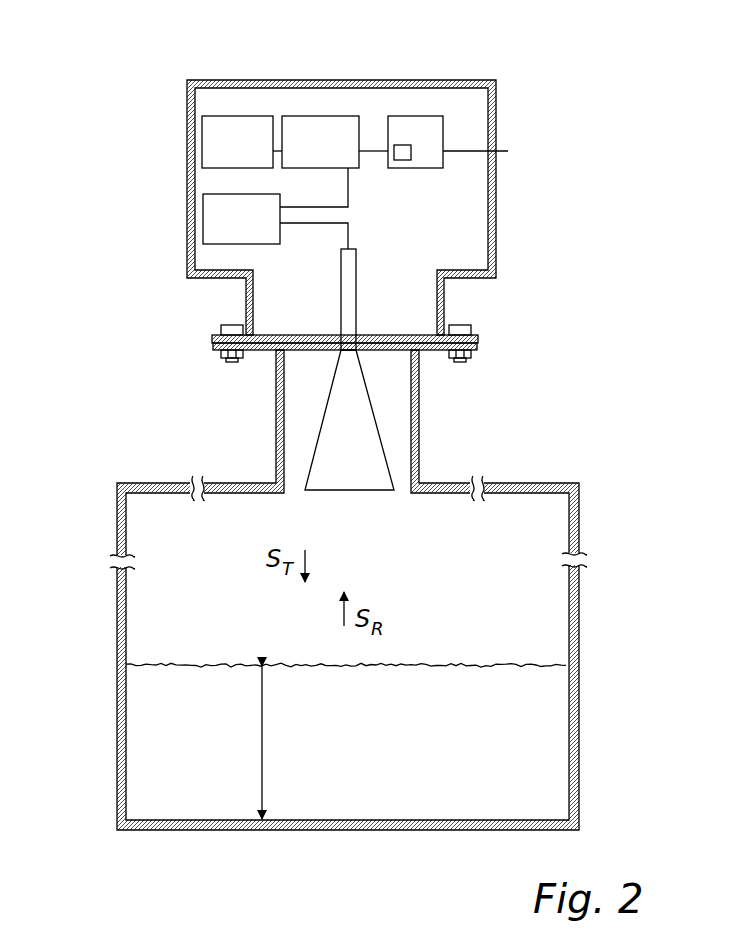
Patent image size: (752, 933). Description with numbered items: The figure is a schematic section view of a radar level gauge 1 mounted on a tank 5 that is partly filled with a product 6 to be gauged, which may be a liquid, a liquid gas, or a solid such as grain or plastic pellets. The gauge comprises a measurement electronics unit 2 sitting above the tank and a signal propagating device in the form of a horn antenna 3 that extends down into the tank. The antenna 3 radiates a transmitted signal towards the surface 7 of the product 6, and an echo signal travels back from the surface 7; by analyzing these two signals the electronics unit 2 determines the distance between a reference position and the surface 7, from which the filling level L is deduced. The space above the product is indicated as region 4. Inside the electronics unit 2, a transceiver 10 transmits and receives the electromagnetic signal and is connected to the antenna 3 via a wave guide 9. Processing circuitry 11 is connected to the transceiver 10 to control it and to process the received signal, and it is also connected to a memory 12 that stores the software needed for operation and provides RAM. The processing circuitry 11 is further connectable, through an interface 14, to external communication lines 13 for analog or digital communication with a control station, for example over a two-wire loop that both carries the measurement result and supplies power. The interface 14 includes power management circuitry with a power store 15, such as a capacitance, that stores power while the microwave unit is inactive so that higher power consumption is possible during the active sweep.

The radar level gauge 1 is at (572, 258).
The measurement electronics unit 2 is at (267, 80).
The horn antenna 3 is at (392, 478).
The tank atmosphere 4 is at (186, 556).
The tank 5 is at (507, 481).
The product 6 is at (513, 765).
The surface 7 is at (535, 663).
The wave guide 9 is at (352, 249).
The transceiver 10 is at (203, 223).
The processing circuitry 11 is at (330, 116).
The memory 12 is at (202, 151).
The external communication lines 13 is at (503, 155).
The interface 14 is at (418, 116).
The power store 15 is at (402, 160).